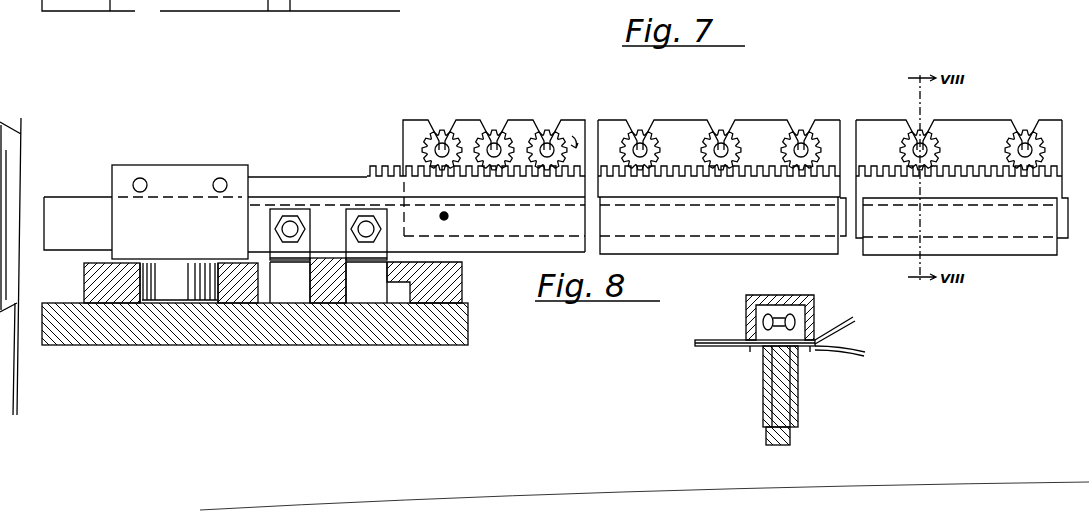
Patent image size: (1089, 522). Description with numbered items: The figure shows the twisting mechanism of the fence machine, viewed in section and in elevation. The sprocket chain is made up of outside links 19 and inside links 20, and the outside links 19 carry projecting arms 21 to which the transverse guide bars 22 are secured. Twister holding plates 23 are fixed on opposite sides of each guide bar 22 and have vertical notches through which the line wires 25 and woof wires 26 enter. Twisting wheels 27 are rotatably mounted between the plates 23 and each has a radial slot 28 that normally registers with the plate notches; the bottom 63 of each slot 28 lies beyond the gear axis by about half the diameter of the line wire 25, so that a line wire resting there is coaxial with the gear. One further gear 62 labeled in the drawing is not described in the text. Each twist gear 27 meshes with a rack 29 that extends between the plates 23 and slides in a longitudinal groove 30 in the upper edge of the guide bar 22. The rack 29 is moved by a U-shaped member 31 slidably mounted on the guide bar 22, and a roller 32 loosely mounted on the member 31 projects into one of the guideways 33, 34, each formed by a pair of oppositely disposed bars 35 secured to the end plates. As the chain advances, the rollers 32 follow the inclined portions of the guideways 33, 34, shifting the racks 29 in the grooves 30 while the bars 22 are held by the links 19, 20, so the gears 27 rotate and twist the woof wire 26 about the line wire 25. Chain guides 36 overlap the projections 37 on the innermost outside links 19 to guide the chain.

In FIG. 7, the outside links 19 is at (300, 0).
In FIG. 8, the outside links 19 is at (287, 300).
In FIG. 7, the inside links 20 is at (334, 0).
In FIG. 8, the inside links 20 is at (322, 300).
In FIG. 8, the projecting arms 21 is at (299, 247).
In FIG. 7, the guide bars 22 is at (280, 6).
In FIG. 8, the guide bars 22 is at (53, 233).
In FIG. 8, the twister holding plates 23 is at (758, 125).
In FIG. 8, the line wires 25 is at (866, 352).
In FIG. 8, the woof wires 26 is at (856, 322).
In FIG. 8, the twisting wheels 27 is at (422, 143).
In FIG. 8, the radial slots 28 is at (492, 146).
In FIG. 8, the rack 29 is at (290, 178).
In FIG. 8, the longitudinal groove 30 is at (62, 198).
In FIG. 8, the U-shaped member 31 is at (125, 225).
In FIG. 8, the roller 32 is at (160, 296).
In FIG. 7, the guideway 33 is at (178, 4).
In FIG. 8, the guideway 33 is at (186, 306).
In FIG. 8, the guideway 34 is at (468, 332).
In FIG. 7, the bars 35 is at (110, 11).
In FIG. 8, the bars 35 is at (110, 300).
In FIG. 8, the chain guides 36 is at (462, 283).
In FIG. 8, the projections 37 is at (405, 300).
In FIG. 8, the gear 62 is at (790, 157).
In FIG. 8, the bottom of gear slot 63 is at (745, 343).